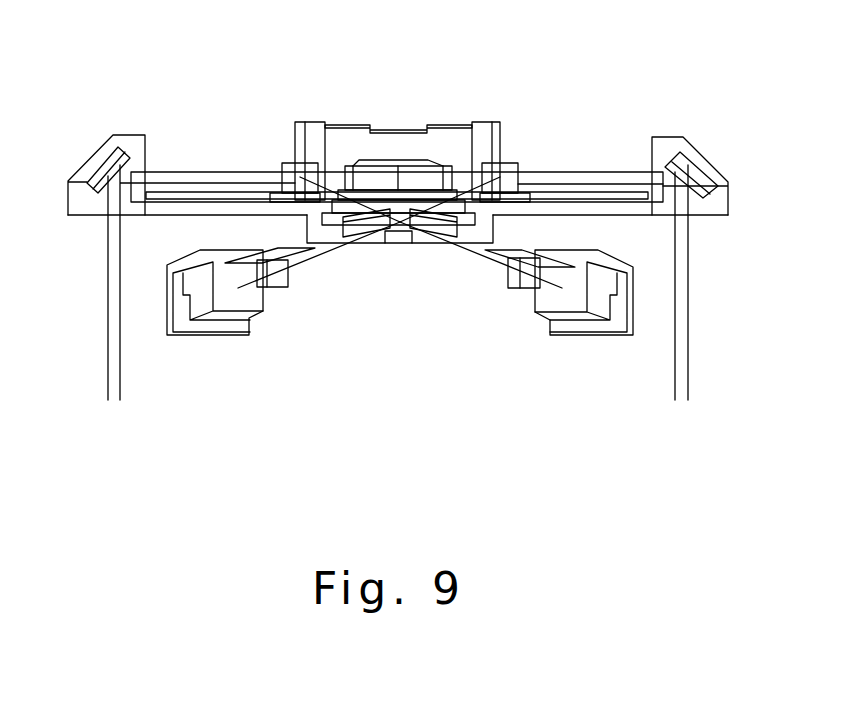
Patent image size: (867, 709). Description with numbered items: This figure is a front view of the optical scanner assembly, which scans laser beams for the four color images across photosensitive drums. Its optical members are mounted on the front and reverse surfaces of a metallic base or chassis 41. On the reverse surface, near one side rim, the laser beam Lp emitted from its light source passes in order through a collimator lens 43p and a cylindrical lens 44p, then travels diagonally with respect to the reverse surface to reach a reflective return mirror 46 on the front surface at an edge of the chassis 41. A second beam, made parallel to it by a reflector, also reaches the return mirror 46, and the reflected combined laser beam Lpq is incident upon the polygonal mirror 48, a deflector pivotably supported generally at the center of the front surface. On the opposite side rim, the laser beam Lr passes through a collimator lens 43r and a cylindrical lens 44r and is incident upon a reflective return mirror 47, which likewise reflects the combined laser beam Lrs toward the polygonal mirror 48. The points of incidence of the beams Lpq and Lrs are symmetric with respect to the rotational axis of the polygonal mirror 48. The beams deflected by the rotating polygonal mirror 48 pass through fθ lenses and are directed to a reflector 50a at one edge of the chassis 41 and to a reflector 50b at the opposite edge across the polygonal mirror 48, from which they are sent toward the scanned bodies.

The chassis 41 is at (625, 211).
The collimator lens 43r is at (223, 315).
The collimator lens 43p is at (577, 315).
The cylindrical lens 44r is at (278, 278).
The cylindrical lens 44p is at (522, 278).
The reflective return mirror 46 is at (292, 165).
The reflective return mirror 47 is at (505, 172).
The polygonal mirror 48 is at (370, 177).
The reflector 50a is at (107, 168).
The reflector 50b is at (683, 168).
The laser beam Lpq is at (243, 175).
The laser beam Lrs is at (532, 178).
The laser beam Lr is at (320, 252).
The laser beam Lp is at (453, 245).